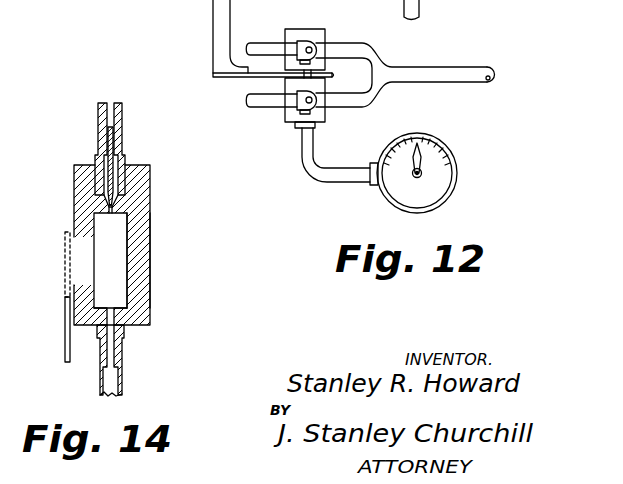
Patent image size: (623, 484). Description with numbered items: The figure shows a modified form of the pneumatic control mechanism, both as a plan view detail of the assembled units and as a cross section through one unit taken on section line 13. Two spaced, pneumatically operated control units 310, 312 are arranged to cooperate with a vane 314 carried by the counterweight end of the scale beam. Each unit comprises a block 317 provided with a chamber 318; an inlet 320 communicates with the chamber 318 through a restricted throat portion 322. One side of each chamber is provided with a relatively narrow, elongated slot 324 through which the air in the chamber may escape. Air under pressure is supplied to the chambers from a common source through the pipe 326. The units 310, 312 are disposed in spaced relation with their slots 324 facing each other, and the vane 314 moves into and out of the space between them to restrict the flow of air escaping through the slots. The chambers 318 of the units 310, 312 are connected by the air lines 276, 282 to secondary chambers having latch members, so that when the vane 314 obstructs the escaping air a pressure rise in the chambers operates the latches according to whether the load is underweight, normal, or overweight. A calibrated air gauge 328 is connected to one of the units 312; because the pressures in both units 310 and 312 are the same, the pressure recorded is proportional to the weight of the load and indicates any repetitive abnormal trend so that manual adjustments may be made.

In FIG. 12, the section line 13- 13 is at (203, 76).
In FIG. 14, the air line 276 is at (122, 377).
In FIG. 12, the air line 276 is at (275, 30).
In FIG. 12, the air line 282 is at (262, 108).
In FIG. 14, the control unit 310 is at (154, 188).
In FIG. 12, the control unit 310 is at (306, 27).
In FIG. 12, the control unit 312 is at (289, 120).
In FIG. 12, the vane 314 is at (247, 78).
In FIG. 14, the block 317 is at (150, 250).
In FIG. 14, the chamber 318 is at (120, 287).
In FIG. 14, the inlet 320 is at (110, 162).
In FIG. 14, the restricted throat portion 322 is at (108, 207).
In FIG. 14, the slot 324 is at (82, 255).
In FIG. 14, the pipe 326 is at (98, 113).
In FIG. 12, the pipe 326 is at (413, 68).
In FIG. 12, the air gauge 328 is at (445, 147).